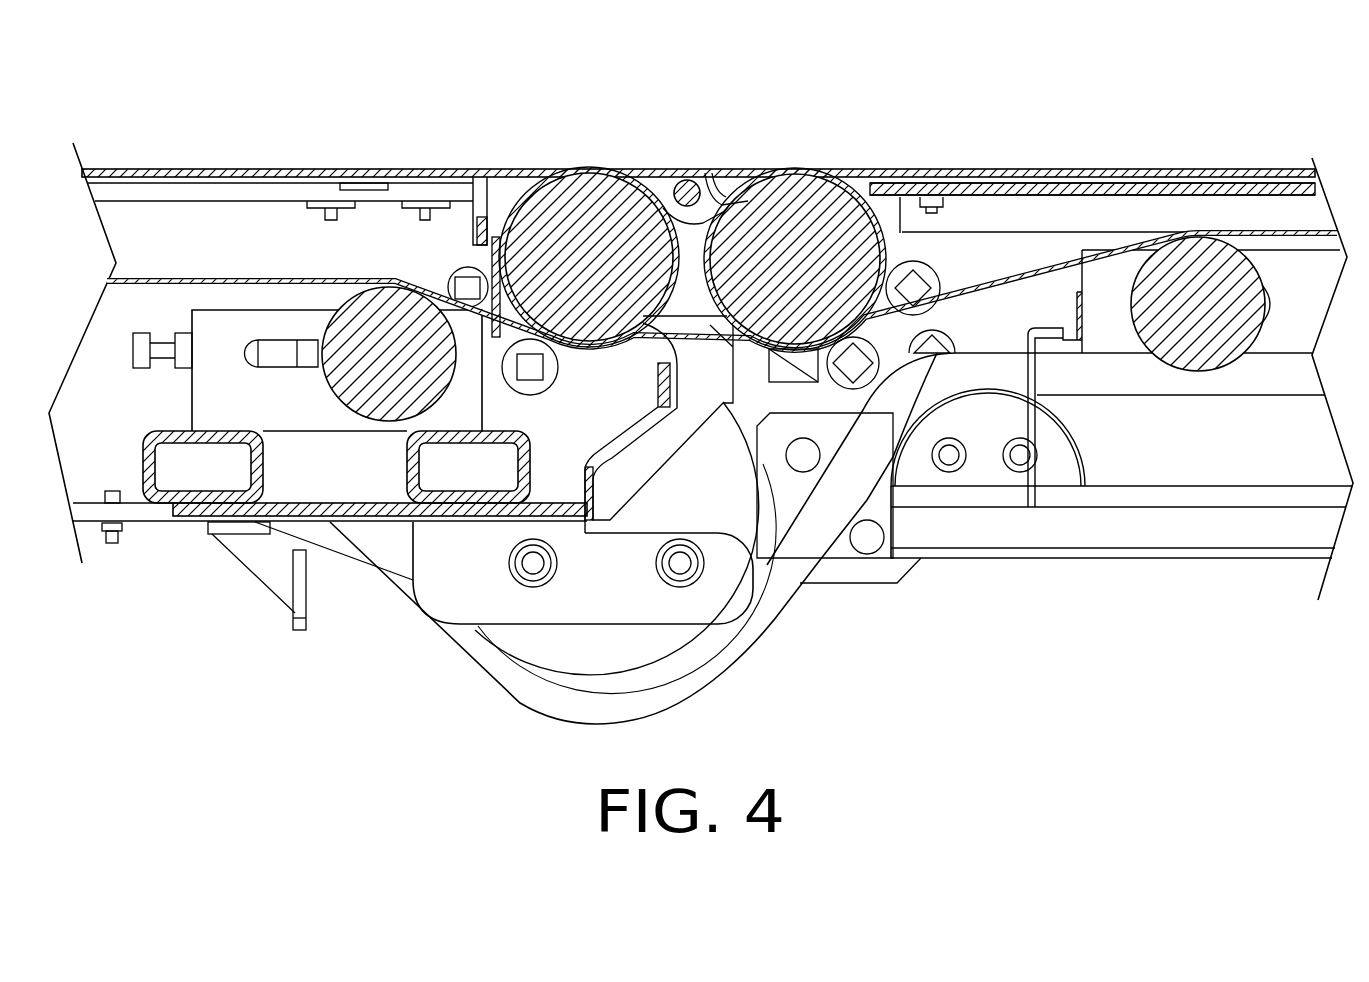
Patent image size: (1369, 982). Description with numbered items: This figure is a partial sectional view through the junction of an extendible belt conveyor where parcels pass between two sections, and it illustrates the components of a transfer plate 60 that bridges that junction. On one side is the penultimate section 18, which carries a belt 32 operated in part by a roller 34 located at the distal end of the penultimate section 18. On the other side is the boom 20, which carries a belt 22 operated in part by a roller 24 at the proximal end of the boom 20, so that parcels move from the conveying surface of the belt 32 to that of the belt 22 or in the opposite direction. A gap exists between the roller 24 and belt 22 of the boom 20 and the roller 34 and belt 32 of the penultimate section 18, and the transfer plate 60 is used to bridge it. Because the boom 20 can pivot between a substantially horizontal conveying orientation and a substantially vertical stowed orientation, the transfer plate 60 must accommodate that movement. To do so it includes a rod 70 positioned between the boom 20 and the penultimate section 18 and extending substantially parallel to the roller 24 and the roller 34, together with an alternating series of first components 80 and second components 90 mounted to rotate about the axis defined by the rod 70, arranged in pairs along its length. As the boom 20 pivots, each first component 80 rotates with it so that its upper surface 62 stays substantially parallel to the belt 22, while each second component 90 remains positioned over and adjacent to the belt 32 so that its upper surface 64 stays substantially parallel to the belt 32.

The penultimate section 18 is at (1143, 560).
The boom 20 is at (115, 545).
The belt 22 is at (258, 170).
The roller 24 is at (530, 188).
The belt 32 is at (1120, 165).
The roller 34 is at (860, 186).
The transfer plate 60 is at (692, 218).
The upper surface 62 is at (625, 176).
The upper surface 64 is at (786, 170).
The rod 70 is at (684, 178).
The first component 80 is at (583, 172).
The second component 90 is at (735, 175).